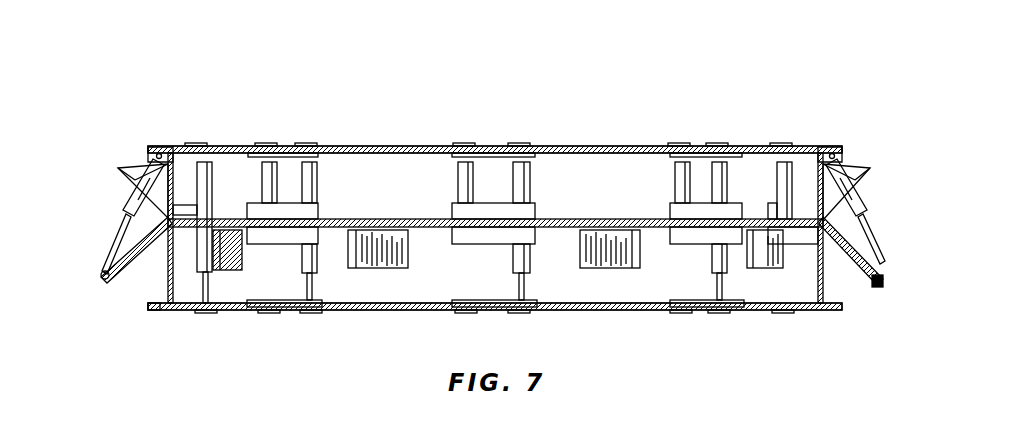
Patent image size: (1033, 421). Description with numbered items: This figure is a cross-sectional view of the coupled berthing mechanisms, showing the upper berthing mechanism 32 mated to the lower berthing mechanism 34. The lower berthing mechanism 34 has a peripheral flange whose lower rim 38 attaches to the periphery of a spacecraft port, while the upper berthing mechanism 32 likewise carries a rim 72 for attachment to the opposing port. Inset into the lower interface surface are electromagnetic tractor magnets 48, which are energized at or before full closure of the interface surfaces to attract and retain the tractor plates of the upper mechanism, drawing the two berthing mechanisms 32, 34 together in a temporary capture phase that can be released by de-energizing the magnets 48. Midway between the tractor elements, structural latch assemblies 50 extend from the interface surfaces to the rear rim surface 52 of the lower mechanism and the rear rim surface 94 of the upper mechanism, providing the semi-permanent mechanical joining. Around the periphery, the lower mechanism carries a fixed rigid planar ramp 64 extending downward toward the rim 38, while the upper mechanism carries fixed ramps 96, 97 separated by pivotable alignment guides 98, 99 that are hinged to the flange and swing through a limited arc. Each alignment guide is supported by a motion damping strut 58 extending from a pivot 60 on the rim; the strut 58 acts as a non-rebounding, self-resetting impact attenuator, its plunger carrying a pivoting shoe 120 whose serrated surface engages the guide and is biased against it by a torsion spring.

The upper berthing mechanism 32 is at (417, 143).
The lower berthing mechanism 34 is at (428, 313).
The lower rim 38 is at (160, 311).
The electromagnetic tractor magnets 48 is at (368, 270).
The structural latch assemblies 50 is at (330, 203).
The rear rim surface 52 is at (600, 312).
The motion damping strut 58 is at (130, 200).
The pivot 60 is at (158, 148).
The rigid planar ramp 64 is at (876, 290).
The rim 72 is at (231, 146).
The rear rim surface 94 is at (599, 146).
The fixed ramp 96 is at (860, 172).
The fixed ramp 97 is at (133, 162).
The pivotable alignment guide 98 is at (885, 280).
The pivotable alignment guide 99 is at (148, 260).
The pivoting shoe 120 is at (868, 258).